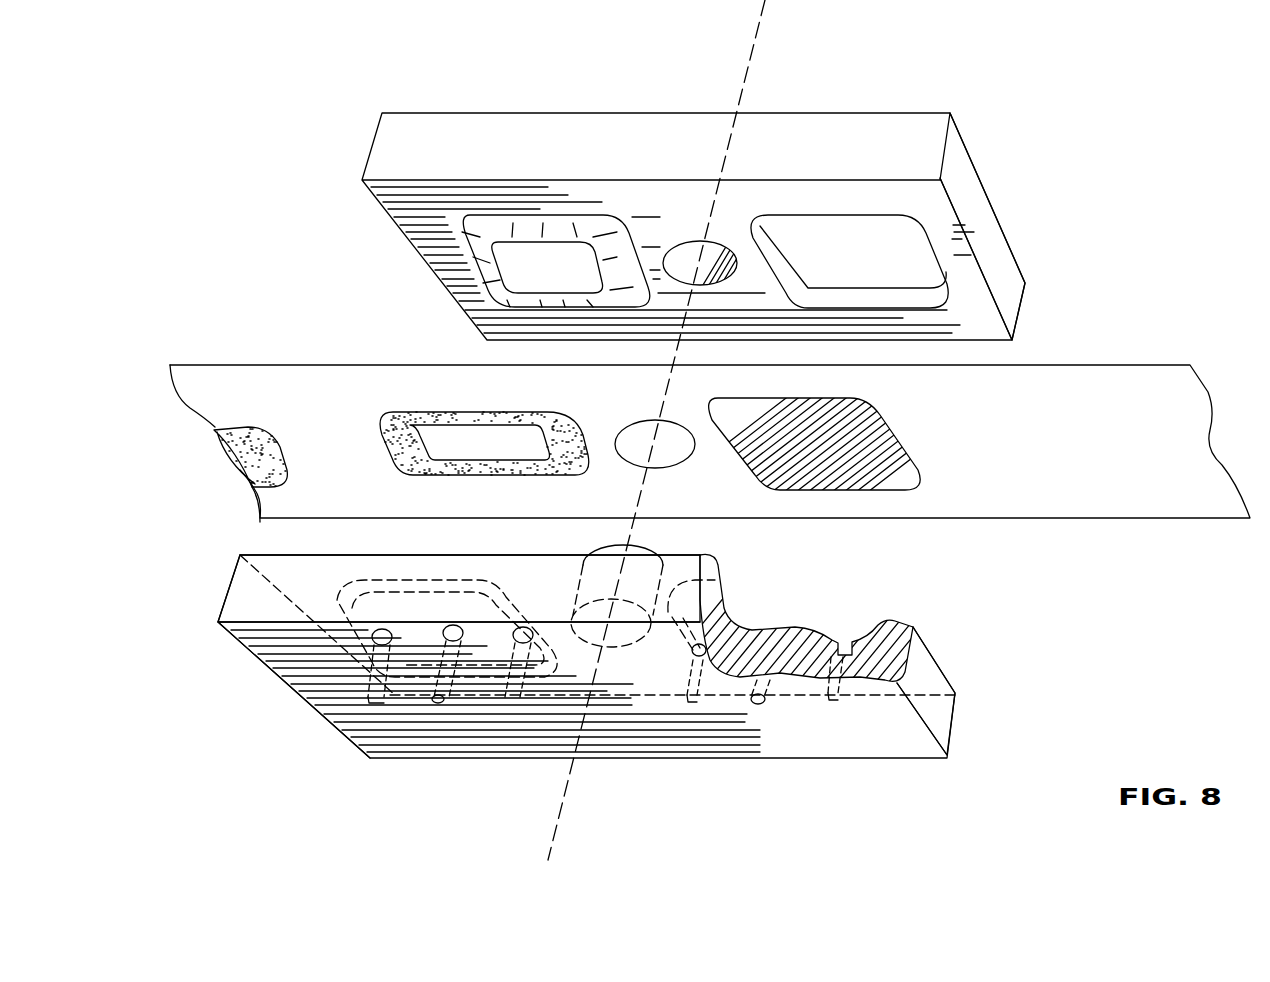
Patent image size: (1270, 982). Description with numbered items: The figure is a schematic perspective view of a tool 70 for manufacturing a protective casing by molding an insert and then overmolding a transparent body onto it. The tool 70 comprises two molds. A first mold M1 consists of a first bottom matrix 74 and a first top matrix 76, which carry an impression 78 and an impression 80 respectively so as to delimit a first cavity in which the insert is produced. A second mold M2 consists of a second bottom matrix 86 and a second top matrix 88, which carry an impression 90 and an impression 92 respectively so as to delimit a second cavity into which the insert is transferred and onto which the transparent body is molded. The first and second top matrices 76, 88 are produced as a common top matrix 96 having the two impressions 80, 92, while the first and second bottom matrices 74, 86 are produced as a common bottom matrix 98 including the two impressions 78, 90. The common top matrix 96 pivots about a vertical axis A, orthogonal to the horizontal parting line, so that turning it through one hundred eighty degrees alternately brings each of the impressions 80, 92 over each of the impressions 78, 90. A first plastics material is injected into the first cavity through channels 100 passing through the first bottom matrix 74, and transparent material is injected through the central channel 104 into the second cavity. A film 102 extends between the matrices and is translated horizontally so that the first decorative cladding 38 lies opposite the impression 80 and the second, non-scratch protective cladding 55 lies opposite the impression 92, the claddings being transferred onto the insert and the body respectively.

The tool 70 is at (320, 85).
The first bottom matrix 74 is at (275, 553).
The first top matrix 76 is at (407, 205).
The impression 78 is at (283, 690).
The impression 80 is at (525, 265).
The second bottom matrix 86 is at (907, 610).
The second top matrix 88 is at (975, 303).
The impression 90 is at (722, 605).
The impression 92 is at (900, 246).
The common top matrix 96 is at (652, 98).
The common bottom matrix 98 is at (732, 773).
The channels 100 is at (367, 692).
The film 102 is at (1148, 363).
The central channel 104 is at (437, 700).
The first cladding 38 is at (382, 425).
The second cladding 55 is at (905, 455).
The first mold M1 is at (220, 200).
The second mold M2 is at (1082, 228).
The vertical axis A is at (785, 22).